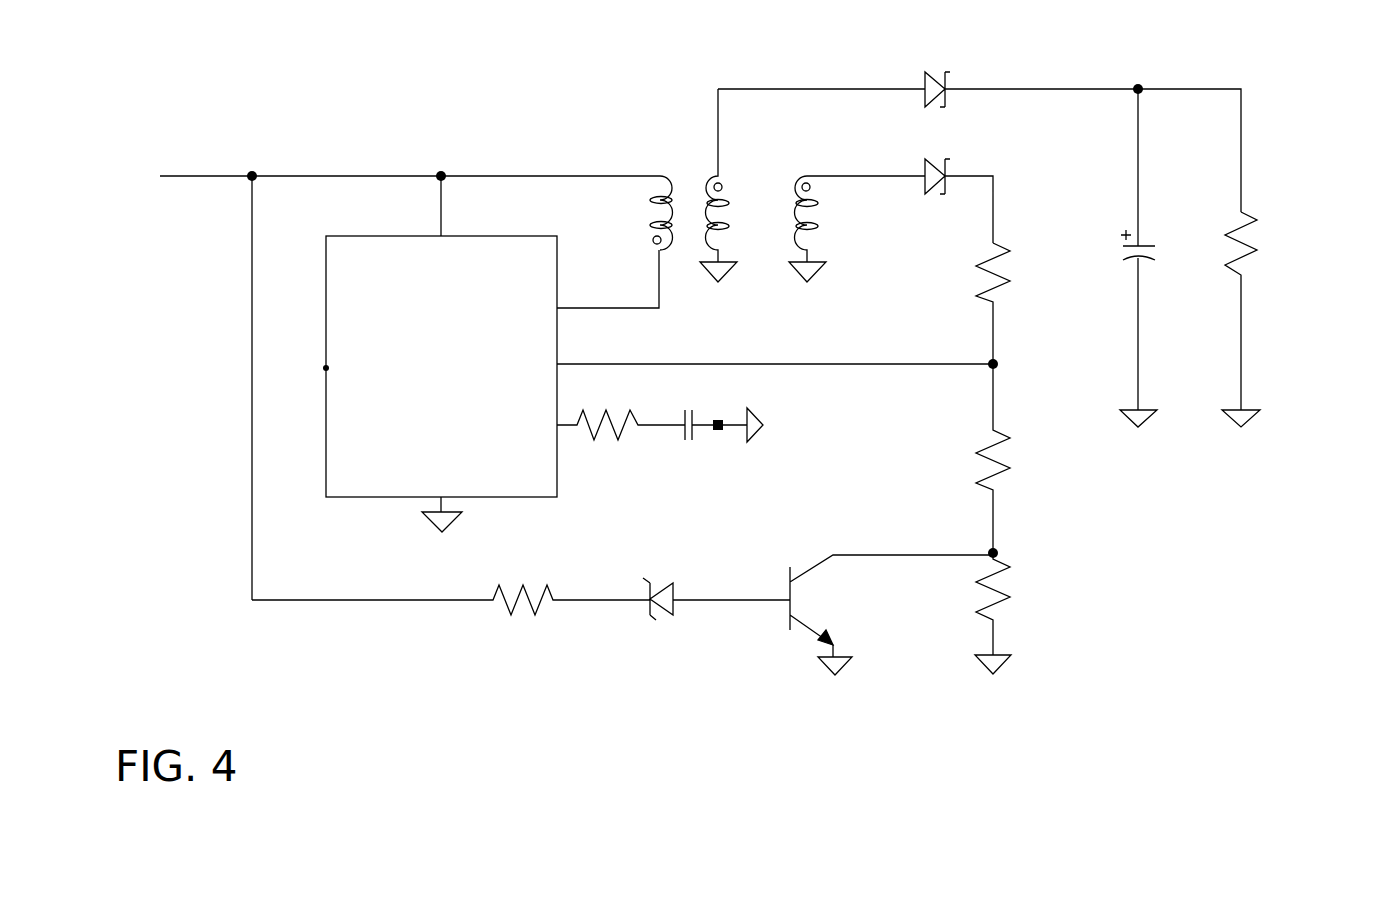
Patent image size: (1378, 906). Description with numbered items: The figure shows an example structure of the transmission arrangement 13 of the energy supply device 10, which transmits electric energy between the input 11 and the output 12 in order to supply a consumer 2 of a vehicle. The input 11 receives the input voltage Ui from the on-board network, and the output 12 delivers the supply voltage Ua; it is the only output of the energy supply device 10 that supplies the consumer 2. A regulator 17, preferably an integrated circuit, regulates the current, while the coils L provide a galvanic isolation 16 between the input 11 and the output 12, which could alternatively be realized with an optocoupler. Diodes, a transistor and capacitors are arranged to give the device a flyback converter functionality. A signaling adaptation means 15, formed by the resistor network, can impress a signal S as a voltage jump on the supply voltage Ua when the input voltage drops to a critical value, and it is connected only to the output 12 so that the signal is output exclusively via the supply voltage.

The consumer 2 is at (1297, 323).
The energy supply device 10 is at (428, 135).
The input 11 is at (222, 140).
The output 12 is at (1302, 88).
The transmission arrangement 13 is at (362, 668).
The signaling adaptation means 15 is at (1095, 544).
The galvanic isolation 16 is at (652, 135).
The regulator 17 is at (326, 368).